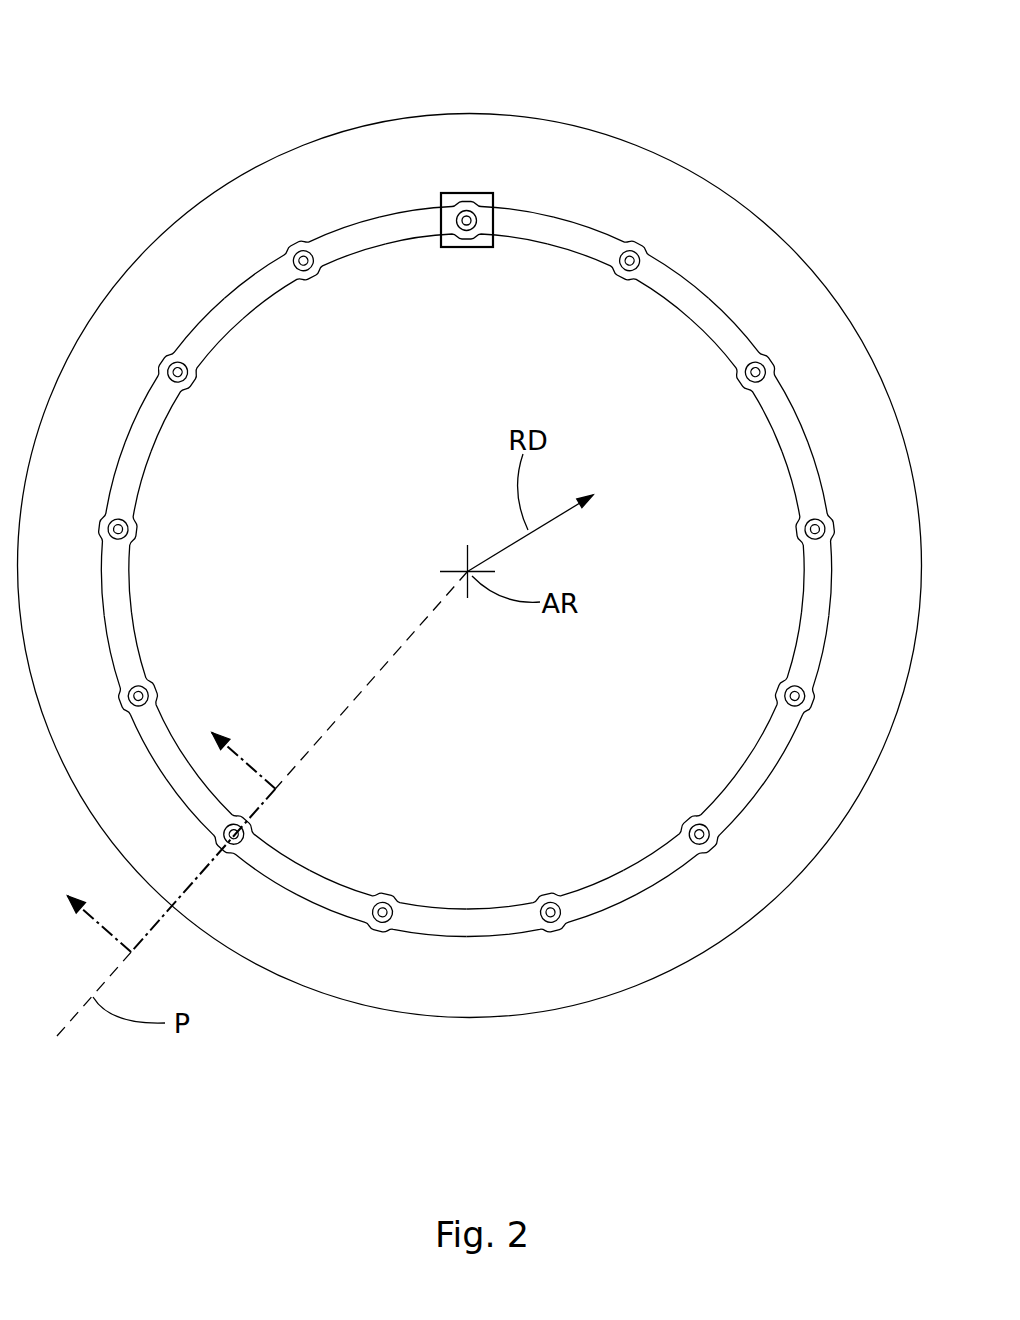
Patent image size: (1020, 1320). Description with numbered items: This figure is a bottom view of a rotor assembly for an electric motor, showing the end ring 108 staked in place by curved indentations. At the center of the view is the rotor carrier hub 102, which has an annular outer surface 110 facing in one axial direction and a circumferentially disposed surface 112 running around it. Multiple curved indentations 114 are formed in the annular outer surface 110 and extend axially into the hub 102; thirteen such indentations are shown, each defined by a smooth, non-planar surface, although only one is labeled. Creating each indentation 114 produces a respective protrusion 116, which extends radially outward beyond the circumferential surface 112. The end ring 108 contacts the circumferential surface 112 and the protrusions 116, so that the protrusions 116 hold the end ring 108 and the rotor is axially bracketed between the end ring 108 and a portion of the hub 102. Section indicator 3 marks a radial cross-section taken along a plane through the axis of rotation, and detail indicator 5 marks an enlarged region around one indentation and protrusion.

The rotor carrier hub 102 is at (737, 325).
The end ring 108 is at (367, 123).
The annular outer surface 110 is at (785, 418).
The circumferentially disposed surface 112 is at (667, 265).
The curved indentation 114 is at (297, 258).
The protrusion 116 is at (298, 242).
The section line 3- 3 is at (163, 824).
The detail view 5 is at (493, 193).